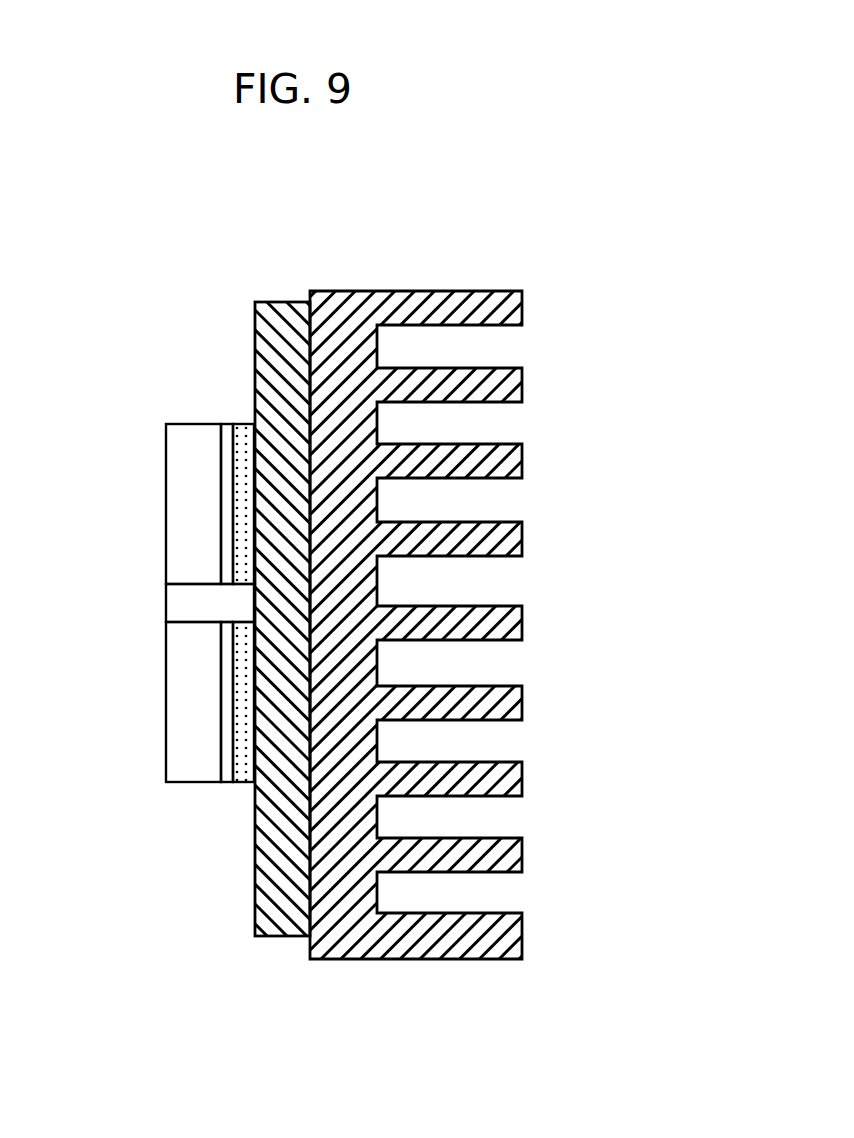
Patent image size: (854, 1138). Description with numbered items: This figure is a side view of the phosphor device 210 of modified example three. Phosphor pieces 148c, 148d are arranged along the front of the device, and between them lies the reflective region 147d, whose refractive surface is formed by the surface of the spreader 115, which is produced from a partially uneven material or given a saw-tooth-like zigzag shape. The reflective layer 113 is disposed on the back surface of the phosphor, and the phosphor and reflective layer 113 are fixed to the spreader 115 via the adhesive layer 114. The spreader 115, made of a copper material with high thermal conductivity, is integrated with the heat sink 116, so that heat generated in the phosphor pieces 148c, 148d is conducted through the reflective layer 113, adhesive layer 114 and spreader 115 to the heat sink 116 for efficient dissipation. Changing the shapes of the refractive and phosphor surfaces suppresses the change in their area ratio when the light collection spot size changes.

The phosphor device 210 is at (67, 322).
The reflective layer 113 is at (227, 424).
The adhesive layer 114 is at (244, 424).
The spreader 115 is at (255, 900).
The heat sink 116 is at (310, 952).
The reflective region 147d is at (187, 603).
The phosphor piece 148c is at (187, 700).
The phosphor piece 148d is at (187, 473).